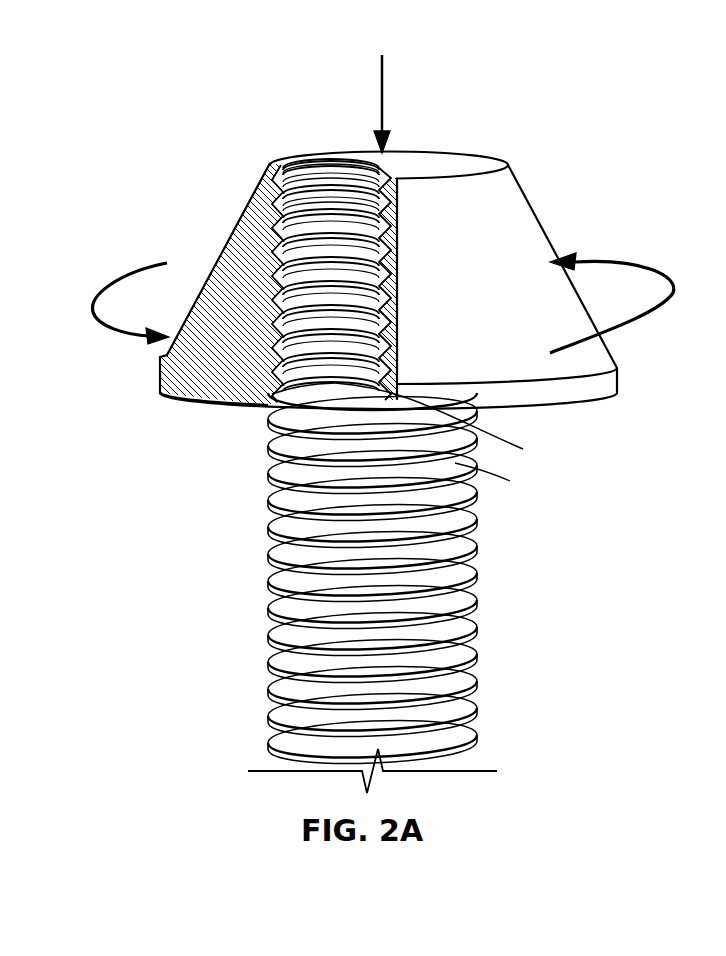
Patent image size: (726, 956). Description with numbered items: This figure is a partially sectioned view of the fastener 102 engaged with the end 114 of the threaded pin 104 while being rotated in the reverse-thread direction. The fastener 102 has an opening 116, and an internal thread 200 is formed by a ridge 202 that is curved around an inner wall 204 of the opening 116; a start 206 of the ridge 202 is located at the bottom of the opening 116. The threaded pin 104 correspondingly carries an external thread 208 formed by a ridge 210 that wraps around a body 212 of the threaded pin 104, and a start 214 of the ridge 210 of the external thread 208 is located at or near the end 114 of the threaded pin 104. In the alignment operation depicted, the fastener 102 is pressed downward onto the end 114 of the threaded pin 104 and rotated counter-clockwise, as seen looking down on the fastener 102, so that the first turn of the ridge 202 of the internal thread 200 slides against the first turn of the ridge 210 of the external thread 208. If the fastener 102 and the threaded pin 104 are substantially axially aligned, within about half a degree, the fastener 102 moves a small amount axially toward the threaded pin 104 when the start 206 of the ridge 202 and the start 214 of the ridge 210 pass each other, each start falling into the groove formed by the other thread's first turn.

The fastener 102 is at (503, 207).
The threaded pin 104 is at (340, 593).
The end of the threaded pin 114 is at (337, 378).
The opening 116 is at (291, 146).
The internal thread 200 is at (298, 249).
The ridge of the internal thread 202 is at (325, 214).
The inner wall 204 is at (288, 203).
The start of the ridge of the internal thread 206 is at (453, 424).
The external thread 208 is at (277, 497).
The ridge of the external thread 210 is at (273, 448).
The body of the threaded pin 212 is at (280, 615).
The start of the ridge of the external thread 214 is at (506, 481).